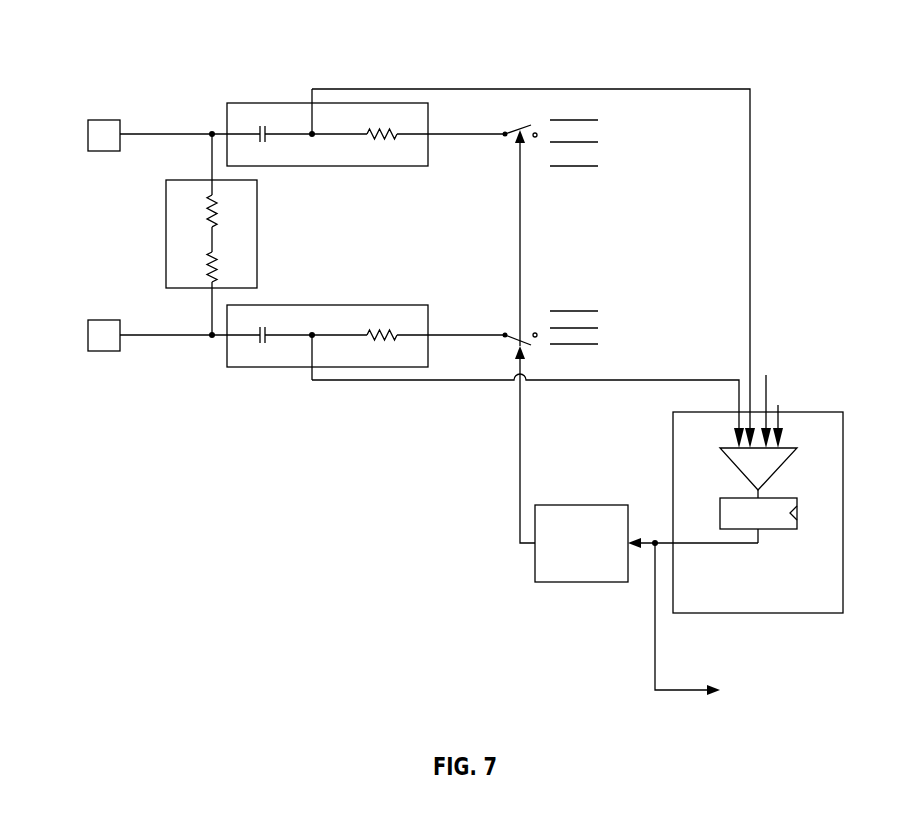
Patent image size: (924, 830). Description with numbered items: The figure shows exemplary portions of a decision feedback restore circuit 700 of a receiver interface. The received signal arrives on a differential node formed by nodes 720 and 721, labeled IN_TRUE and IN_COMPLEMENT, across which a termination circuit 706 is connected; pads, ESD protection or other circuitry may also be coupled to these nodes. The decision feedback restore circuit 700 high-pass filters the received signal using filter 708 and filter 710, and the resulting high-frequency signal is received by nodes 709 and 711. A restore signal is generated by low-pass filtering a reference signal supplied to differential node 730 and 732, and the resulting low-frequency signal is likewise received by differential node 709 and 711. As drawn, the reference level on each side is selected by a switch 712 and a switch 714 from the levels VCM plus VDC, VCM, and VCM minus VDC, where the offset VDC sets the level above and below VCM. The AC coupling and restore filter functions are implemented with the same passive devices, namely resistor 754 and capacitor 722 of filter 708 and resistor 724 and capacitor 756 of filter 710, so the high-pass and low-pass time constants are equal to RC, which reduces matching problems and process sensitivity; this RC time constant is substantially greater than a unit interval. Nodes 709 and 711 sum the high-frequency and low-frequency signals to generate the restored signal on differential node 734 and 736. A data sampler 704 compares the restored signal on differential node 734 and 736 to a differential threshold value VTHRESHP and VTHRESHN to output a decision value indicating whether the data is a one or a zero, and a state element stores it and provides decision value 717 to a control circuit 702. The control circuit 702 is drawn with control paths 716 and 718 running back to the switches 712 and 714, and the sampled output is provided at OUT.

The decision feedback restore circuit 700 is at (176, 40).
The control circuit 702 is at (598, 570).
The data sampler 704 is at (772, 605).
The termination circuit 706 is at (252, 240).
The filter 708 is at (313, 124).
The node 709 is at (312, 137).
The filter 710 is at (327, 350).
The node 711 is at (313, 332).
The switch 712 is at (512, 131).
The switch 714 is at (512, 339).
The control line 716 is at (520, 234).
The decision value 717 is at (655, 540).
The control line 718 is at (520, 448).
The node 720 is at (180, 133).
The node 721 is at (181, 333).
The capacitor 722 is at (261, 126).
The resistor 724 is at (262, 344).
The differential node 730 is at (456, 136).
The differential node 732 is at (454, 334).
The differential node 734 is at (523, 89).
The differential node 736 is at (571, 382).
The resistor 754 is at (373, 119).
The capacitor 756 is at (373, 319).